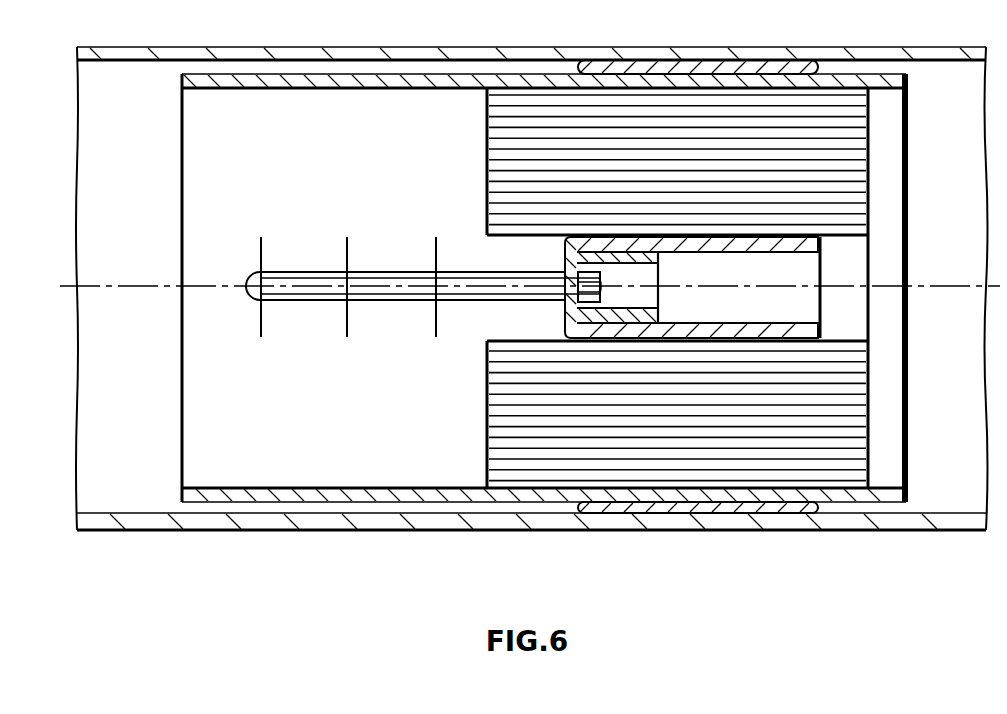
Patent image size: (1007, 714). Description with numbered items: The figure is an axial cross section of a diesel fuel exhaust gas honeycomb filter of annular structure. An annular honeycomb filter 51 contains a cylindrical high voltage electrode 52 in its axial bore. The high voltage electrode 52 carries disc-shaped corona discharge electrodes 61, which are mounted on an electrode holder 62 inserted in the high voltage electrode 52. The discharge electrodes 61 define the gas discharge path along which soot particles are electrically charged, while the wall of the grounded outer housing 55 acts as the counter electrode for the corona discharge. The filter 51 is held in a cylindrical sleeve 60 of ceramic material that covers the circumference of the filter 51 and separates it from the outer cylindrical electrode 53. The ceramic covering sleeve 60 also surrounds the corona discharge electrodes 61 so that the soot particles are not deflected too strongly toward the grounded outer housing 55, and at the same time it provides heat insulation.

The annular honeycomb filter 51 is at (487, 169).
The high voltage electrode 52 is at (700, 251).
The outer cylindrical electrode 53 is at (668, 66).
The outer housing 55 is at (194, 47).
The cylindrical sleeve 60 is at (307, 90).
The corona discharge electrodes 61 is at (345, 262).
The electrode holder 62 is at (543, 272).